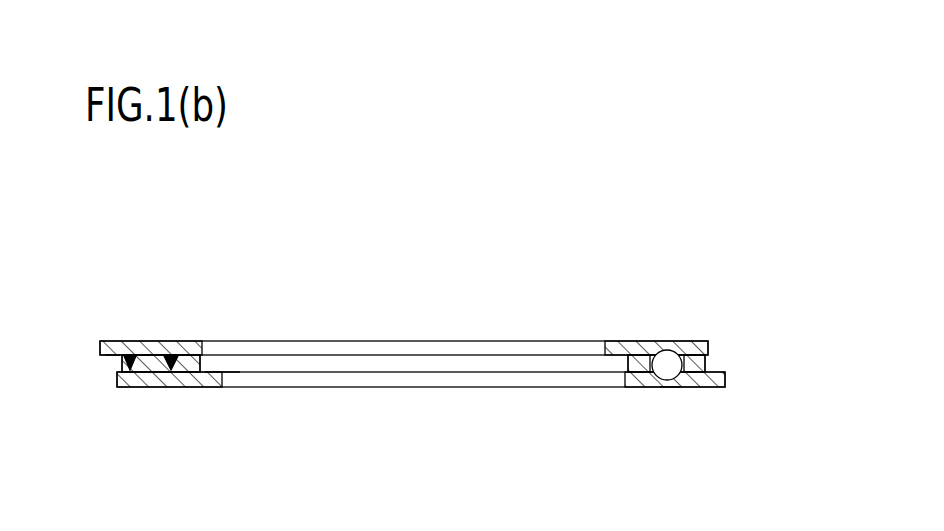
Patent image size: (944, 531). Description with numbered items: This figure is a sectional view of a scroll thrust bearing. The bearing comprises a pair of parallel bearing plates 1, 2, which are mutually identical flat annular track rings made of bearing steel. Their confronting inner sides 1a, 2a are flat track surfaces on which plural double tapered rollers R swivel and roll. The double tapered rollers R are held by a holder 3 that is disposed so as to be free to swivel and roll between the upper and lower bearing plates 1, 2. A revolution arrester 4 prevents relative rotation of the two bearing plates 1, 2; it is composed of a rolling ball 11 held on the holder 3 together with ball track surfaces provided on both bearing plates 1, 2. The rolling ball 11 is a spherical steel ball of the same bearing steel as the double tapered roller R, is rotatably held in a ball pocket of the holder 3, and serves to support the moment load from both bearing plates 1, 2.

The bearing plate 1 is at (712, 338).
The inner side 1a is at (113, 358).
The bearing plate 2 is at (732, 382).
The inner side 2a is at (213, 372).
The holder 3 is at (710, 366).
The revolution arrester 4 is at (670, 393).
The rolling ball 11 is at (670, 358).
The double tapered roller R is at (178, 354).